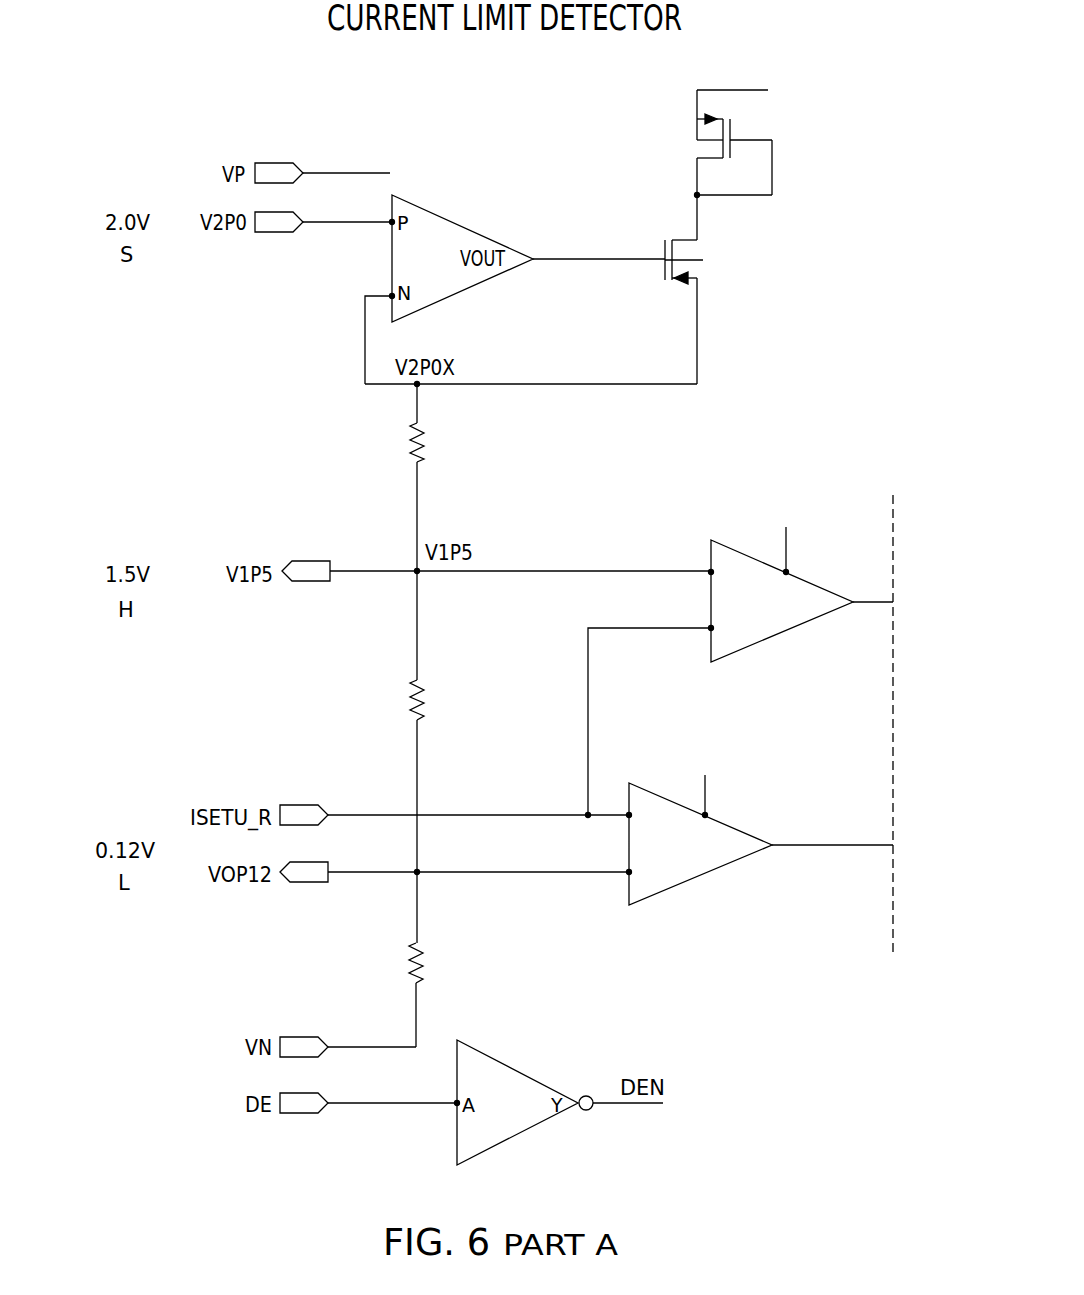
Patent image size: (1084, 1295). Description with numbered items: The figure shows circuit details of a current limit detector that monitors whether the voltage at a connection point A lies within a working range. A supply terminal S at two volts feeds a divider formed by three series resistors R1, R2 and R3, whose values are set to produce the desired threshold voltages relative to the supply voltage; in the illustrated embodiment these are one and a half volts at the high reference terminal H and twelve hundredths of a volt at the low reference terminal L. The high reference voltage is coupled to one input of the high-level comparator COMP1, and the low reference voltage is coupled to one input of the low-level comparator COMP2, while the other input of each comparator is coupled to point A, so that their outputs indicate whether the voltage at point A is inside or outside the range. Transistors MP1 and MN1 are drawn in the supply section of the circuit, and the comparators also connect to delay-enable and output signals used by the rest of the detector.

The PMOS transistor MP1 is at (714, 152).
The NMOS transistor MN1 is at (702, 306).
The resistor R1 is at (453, 455).
The resistor R2 is at (445, 693).
The resistor R3 is at (449, 974).
The high-level comparator COMP1 is at (729, 546).
The low-level comparator COMP2 is at (644, 788).